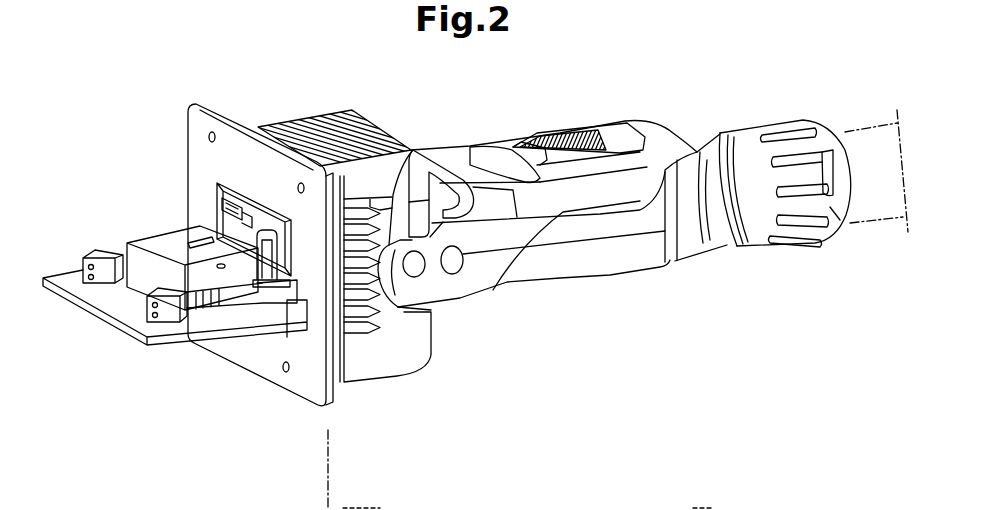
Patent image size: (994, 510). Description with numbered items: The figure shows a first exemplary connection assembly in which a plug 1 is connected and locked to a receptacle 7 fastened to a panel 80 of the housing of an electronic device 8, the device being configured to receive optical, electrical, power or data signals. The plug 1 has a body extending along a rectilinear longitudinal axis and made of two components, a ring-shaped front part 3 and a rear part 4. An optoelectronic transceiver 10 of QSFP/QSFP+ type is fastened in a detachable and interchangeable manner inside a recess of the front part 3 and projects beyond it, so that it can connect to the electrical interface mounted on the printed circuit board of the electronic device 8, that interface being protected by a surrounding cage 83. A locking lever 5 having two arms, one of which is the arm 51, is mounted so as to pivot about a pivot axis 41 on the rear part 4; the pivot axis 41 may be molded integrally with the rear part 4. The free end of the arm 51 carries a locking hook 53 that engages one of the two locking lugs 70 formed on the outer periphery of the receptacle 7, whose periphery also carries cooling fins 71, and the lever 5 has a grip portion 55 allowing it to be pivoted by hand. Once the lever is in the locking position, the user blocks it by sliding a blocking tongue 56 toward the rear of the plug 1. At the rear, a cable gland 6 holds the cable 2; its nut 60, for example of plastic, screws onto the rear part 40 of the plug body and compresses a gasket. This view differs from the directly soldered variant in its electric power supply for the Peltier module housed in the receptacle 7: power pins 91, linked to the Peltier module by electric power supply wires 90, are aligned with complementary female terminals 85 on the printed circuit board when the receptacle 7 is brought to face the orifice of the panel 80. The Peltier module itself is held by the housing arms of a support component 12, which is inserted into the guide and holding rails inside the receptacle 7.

The plug 1 is at (589, 100).
The cable 2 is at (870, 140).
The front part 3 is at (235, 278).
The rear part 4 is at (636, 262).
The locking lever 5 is at (505, 148).
The cable gland 6 is at (862, 322).
The receptacle 7 is at (415, 350).
The electronic device 8 is at (104, 157).
The optoelectronic transceiver 10 is at (273, 270).
The support component 12 is at (215, 285).
The rear part of the plug body 40 is at (728, 222).
The pivot axis 41 is at (455, 260).
The arm 51 is at (543, 200).
The locking hook 53 is at (413, 150).
The grip portion 55 is at (657, 132).
The blocking tongue 56 is at (560, 133).
The nut 60 is at (800, 227).
The locking lug 70 is at (445, 285).
The cooling fins 71 is at (332, 117).
The panel 80 is at (199, 117).
The cage 83 is at (148, 268).
The female terminals 85 is at (105, 252).
The electric power supply wires 90 is at (215, 205).
The power pins 91 is at (178, 245).